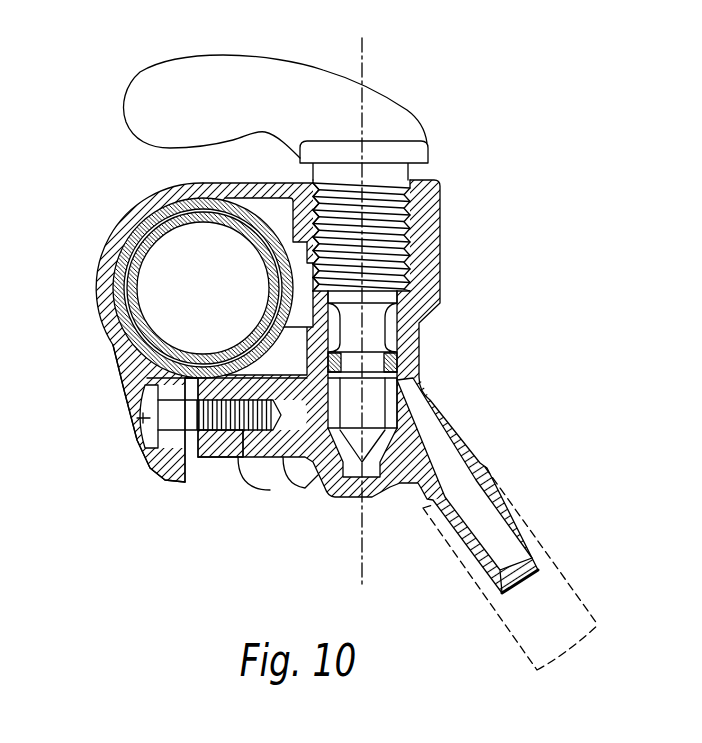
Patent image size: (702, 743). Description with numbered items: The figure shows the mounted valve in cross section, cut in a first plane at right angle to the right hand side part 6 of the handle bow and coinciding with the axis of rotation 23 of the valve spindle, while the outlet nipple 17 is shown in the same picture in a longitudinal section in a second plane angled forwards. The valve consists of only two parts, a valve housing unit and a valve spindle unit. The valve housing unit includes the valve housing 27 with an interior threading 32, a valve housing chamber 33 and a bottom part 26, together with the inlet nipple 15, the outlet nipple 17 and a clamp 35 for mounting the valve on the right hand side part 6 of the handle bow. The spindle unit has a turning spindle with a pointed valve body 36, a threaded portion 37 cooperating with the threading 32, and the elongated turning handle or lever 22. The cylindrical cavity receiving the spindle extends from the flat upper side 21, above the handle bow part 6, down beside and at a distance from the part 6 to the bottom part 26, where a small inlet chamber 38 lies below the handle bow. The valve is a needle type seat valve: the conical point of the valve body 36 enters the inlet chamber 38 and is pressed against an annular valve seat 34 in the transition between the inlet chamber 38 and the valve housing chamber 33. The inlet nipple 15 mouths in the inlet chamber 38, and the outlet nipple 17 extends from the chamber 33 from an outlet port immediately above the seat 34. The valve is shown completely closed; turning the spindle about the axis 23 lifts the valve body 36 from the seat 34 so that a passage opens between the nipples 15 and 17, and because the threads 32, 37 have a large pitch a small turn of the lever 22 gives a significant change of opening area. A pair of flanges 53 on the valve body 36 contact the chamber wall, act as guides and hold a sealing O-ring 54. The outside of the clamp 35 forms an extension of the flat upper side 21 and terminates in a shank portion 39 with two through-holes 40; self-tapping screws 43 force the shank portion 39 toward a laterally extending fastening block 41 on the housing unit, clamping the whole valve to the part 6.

The right hand side part of the handle bow 6 is at (140, 252).
The inlet nipple 15 is at (252, 480).
The outlet nipple 17 is at (490, 500).
The flat upper side 21 is at (233, 186).
The turning handle (lever) 22 is at (214, 72).
The axis of rotation 23 is at (365, 60).
The bottom part 26 is at (382, 487).
The valve housing 27 is at (420, 325).
The interior threading 32 is at (415, 232).
The threaded portion 37 is at (415, 232).
The valve housing chamber 33 is at (393, 397).
The annular valve seat 34 is at (315, 458).
The clamp 35 is at (113, 230).
The pointed valve body 36 is at (375, 408).
The inlet chamber 38 is at (355, 470).
The shank portion 39 is at (172, 440).
The through-holes 40 is at (165, 440).
The fastening block 41 is at (212, 458).
The self-tapping screws 43 is at (240, 455).
The flanges 53 is at (402, 345).
The sealing O-ring 54 is at (398, 364).